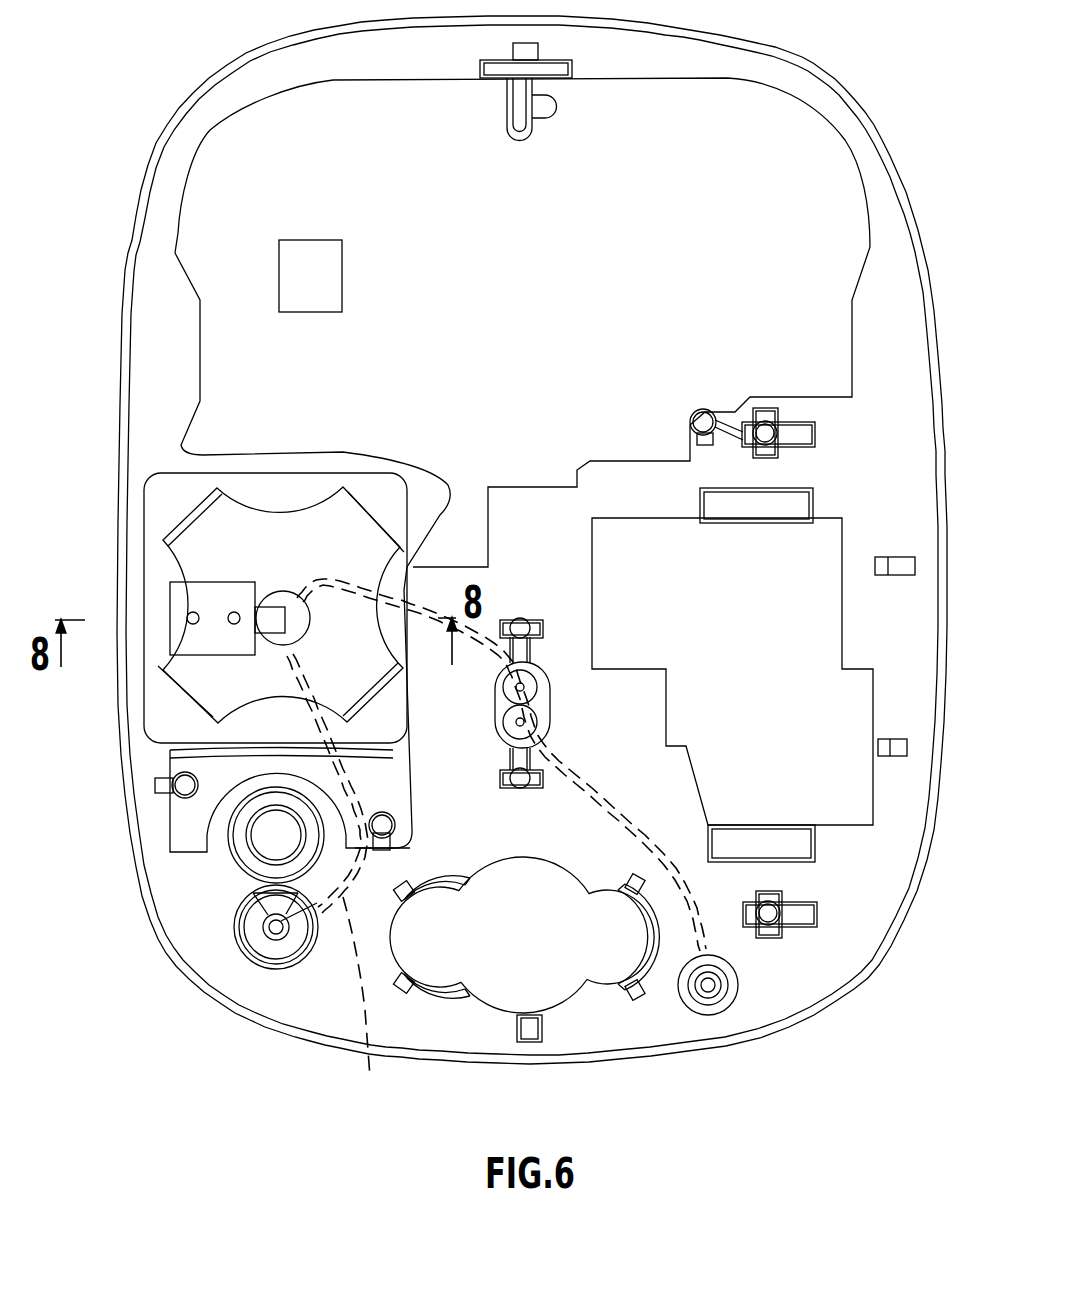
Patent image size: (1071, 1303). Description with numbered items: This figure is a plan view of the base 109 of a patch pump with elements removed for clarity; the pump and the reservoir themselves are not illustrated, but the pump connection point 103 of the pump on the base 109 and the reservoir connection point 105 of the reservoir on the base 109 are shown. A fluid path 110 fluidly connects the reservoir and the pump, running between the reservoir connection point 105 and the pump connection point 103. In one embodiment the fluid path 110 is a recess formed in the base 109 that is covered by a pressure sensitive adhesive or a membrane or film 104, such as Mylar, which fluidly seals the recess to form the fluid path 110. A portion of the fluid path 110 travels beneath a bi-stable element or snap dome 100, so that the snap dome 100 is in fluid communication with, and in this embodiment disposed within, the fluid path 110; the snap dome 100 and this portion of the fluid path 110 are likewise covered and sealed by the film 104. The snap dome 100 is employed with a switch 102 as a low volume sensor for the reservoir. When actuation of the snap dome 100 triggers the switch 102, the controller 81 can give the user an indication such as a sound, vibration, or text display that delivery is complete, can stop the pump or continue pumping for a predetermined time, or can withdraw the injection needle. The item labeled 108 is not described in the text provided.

The controller 81 is at (323, 240).
The snap dome 100 is at (247, 507).
The switch 102 is at (190, 599).
The pump connection point 103 is at (537, 670).
The film 104 is at (327, 470).
The reservoir connection point 105 is at (257, 942).
The housing inner wall 108 is at (222, 220).
The base 109 is at (818, 80).
The fluid path 110 is at (364, 1003).